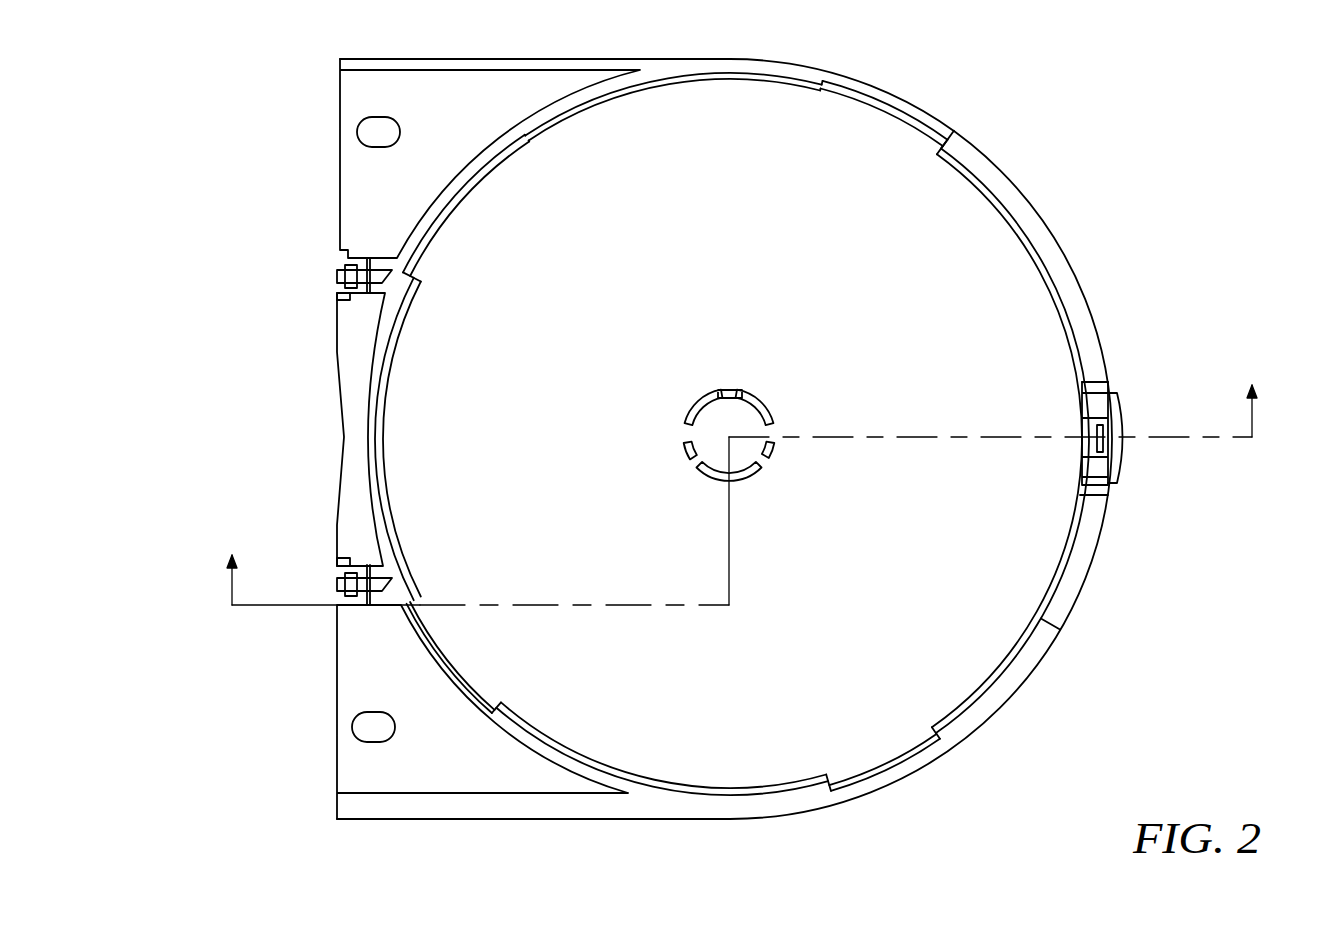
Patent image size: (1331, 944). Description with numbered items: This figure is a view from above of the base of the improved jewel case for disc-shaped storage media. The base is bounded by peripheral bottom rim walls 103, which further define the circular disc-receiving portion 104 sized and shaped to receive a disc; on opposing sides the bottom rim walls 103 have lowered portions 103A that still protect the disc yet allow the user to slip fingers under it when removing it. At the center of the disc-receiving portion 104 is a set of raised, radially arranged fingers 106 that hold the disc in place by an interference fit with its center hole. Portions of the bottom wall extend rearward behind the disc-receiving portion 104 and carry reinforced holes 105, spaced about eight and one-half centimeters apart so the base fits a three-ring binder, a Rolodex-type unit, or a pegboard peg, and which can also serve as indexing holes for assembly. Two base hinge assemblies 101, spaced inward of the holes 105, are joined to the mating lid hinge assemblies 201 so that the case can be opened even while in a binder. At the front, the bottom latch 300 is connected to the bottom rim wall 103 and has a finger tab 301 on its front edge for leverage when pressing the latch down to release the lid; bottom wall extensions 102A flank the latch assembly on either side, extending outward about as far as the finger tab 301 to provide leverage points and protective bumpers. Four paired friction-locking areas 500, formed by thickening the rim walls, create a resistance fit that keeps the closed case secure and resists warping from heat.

The base hinge assembly 101 is at (303, 182).
The lid hinge assembly 201 is at (308, 616).
The bottom rim wall 103 is at (1045, 620).
The lowered portion 103A is at (735, 75).
The bottom wall extension 102A is at (1068, 270).
The disc-receiving portion 104 is at (640, 160).
The reinforced hole 105 is at (397, 110).
The raised radially arranged fingers 106 is at (733, 388).
The bottom latch 300 is at (1110, 372).
The finger tab 301 is at (1130, 407).
The friction-locking area 500 is at (545, 125).